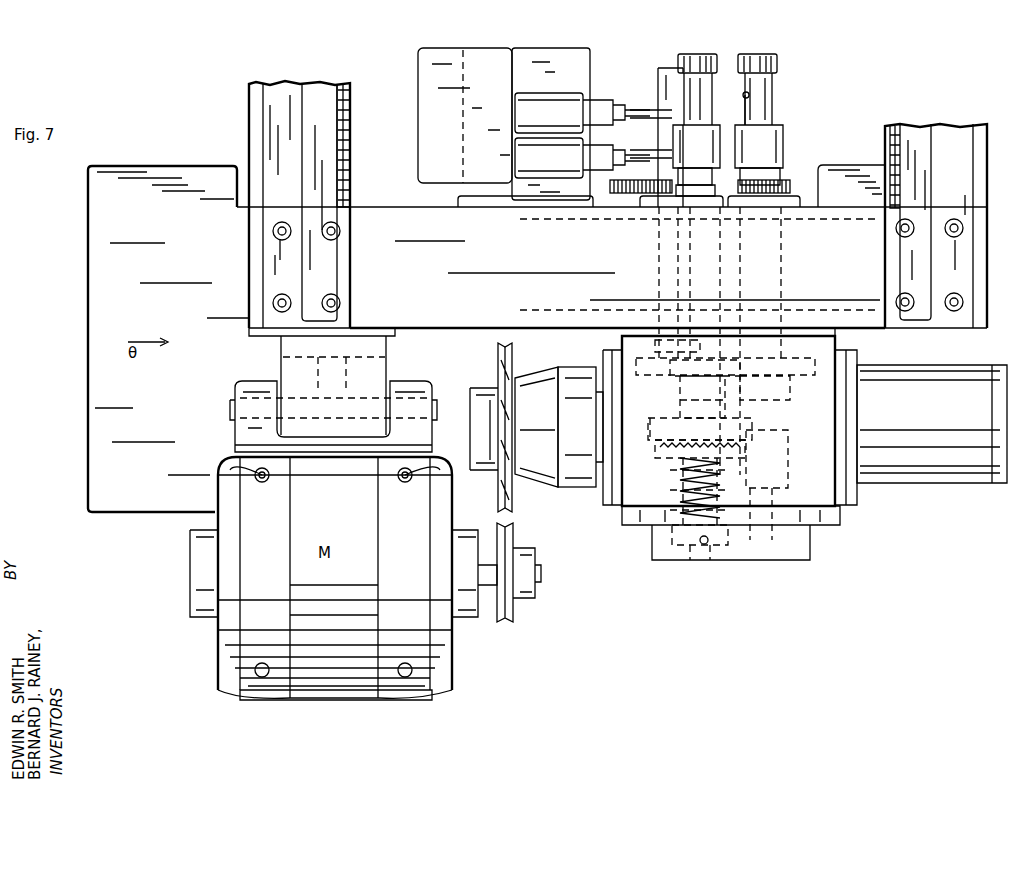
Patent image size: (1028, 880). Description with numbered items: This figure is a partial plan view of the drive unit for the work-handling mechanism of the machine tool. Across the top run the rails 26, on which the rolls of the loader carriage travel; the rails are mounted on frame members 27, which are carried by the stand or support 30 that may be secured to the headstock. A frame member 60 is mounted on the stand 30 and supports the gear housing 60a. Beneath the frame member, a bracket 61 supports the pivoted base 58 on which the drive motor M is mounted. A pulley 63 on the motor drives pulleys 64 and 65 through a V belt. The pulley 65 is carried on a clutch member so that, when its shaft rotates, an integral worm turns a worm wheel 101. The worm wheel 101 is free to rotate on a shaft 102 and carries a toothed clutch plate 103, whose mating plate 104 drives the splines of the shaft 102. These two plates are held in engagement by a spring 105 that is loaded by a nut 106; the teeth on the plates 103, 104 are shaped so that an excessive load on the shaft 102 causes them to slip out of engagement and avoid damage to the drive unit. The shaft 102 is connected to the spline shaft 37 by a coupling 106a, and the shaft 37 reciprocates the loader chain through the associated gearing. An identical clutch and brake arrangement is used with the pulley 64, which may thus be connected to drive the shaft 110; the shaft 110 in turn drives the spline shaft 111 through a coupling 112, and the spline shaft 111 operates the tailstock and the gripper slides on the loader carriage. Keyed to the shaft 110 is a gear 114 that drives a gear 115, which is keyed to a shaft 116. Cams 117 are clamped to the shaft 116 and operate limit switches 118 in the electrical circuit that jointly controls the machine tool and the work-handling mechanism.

The rails 26 is at (340, 122).
The frame members 27 is at (255, 128).
The stand or support 30 is at (199, 170).
The spline shaft 37 is at (715, 78).
The pivoted base 58 is at (424, 436).
The frame member 60 is at (451, 328).
The gear housing 60a is at (840, 340).
The bracket 61 is at (386, 348).
The pulley 63 is at (515, 610).
The pulley 64 is at (497, 498).
The pulley 65 is at (530, 410).
The worm wheel 101 is at (752, 430).
The shaft 102 is at (678, 253).
The toothed clutch plate 103 is at (745, 441).
The mating plate 104 is at (745, 454).
The spring 105 is at (725, 490).
The nut 106 is at (708, 540).
The coupling 106a is at (720, 125).
The shaft 110 is at (781, 265).
The spline shaft 111 is at (778, 66).
The coupling 112 is at (783, 137).
The gear 114 is at (786, 185).
The gear 115 is at (612, 180).
The shaft 116 is at (657, 82).
The cams 117 is at (631, 118).
The limit switches 118 is at (534, 127).